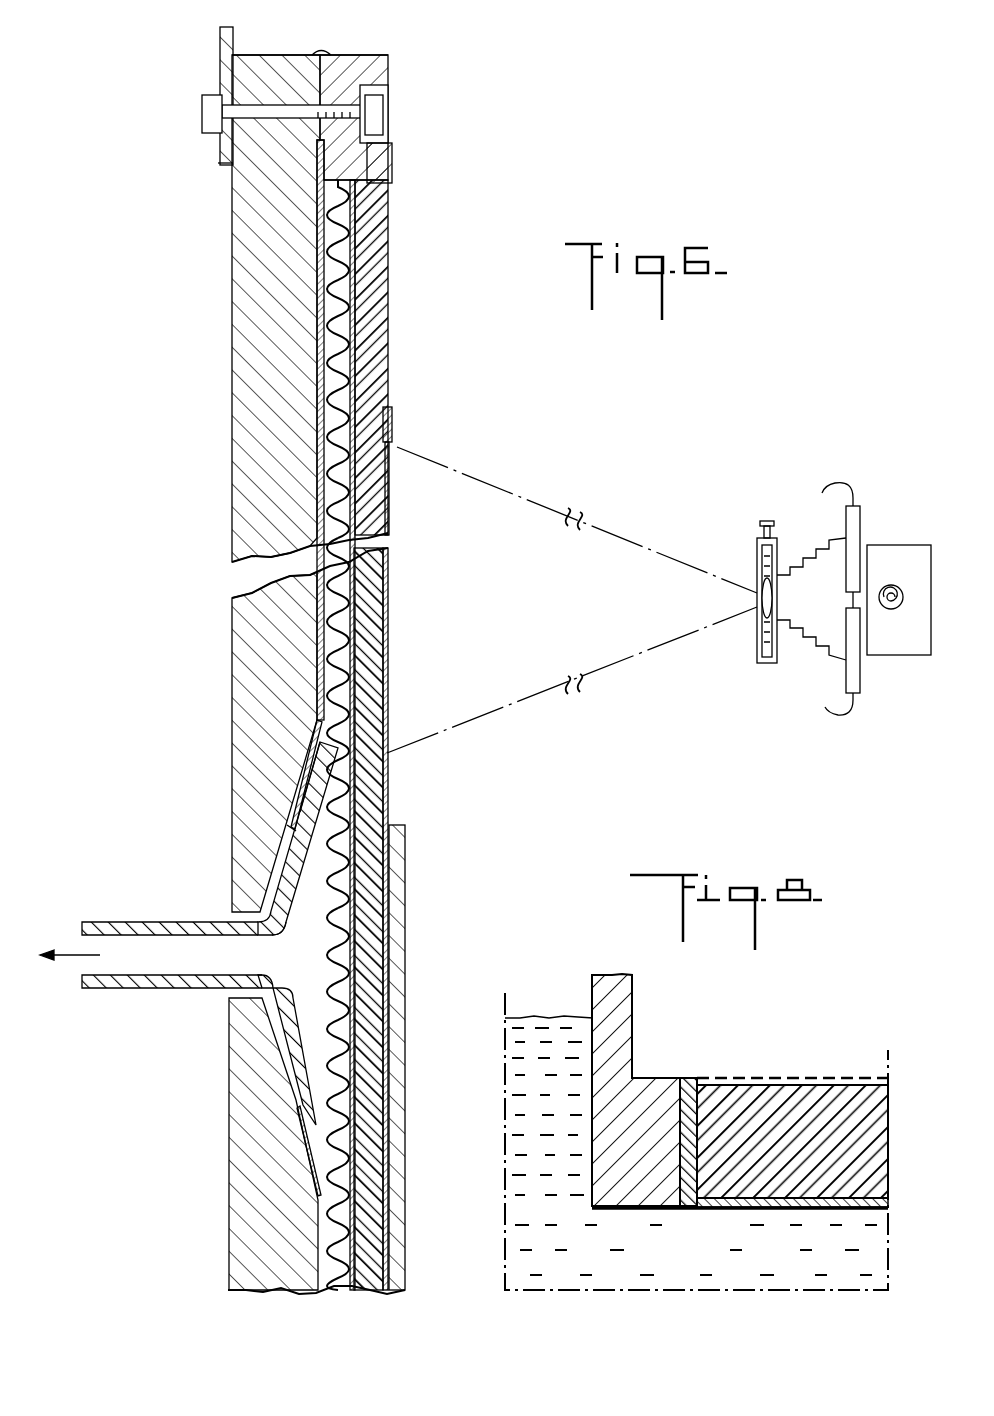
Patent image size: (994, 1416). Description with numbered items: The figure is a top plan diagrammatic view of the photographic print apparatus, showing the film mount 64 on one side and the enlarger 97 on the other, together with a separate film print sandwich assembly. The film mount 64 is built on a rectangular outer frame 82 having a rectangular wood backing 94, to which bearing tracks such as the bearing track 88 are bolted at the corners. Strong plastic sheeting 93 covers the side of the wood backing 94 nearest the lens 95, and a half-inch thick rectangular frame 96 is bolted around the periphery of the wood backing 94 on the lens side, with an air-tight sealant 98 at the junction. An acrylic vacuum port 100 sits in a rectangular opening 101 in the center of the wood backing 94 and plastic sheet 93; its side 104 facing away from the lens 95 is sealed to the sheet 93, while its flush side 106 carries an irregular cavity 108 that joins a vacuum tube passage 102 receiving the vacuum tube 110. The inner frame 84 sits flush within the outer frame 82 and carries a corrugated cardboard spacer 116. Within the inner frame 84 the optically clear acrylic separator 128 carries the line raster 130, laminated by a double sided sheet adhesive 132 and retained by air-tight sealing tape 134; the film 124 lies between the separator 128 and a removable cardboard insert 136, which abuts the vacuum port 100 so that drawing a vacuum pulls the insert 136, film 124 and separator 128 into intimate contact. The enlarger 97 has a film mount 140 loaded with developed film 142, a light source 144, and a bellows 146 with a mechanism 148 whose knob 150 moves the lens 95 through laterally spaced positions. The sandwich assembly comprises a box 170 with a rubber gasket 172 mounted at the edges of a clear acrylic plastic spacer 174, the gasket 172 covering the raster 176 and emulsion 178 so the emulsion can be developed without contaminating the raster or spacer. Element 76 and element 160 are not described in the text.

In FIG. 6, the film mount 64 is at (172, 368).
In FIG. 6, the housing wall 76 is at (246, 314).
In FIG. 6, the rectangular outer frame 82 is at (240, 523).
In FIG. 6, the inner frame 84 is at (372, 376).
In FIG. 6, the bearing track 88 is at (234, 33).
In FIG. 6, the plastic sheeting 93 is at (312, 752).
In FIG. 6, the wood backing 94 is at (233, 1175).
In FIG. 6, the lens 95 is at (756, 598).
In FIG. 6, the rectangular outer frame (spacer) 96 is at (380, 163).
In FIG. 6, the enlarger 97 is at (886, 470).
In FIG. 6, the air-tight sealant 98 is at (334, 50).
In FIG. 6, the acrylic vacuum port 100 is at (292, 1055).
In FIG. 6, the rectangular opening 101 is at (287, 826).
In FIG. 6, the vacuum tube passage 102 is at (262, 937).
In FIG. 6, the side of vacuum port facing away from lens 104 is at (291, 856).
In FIG. 6, the side of vacuum port facing lens 106 is at (312, 800).
In FIG. 6, the irregular cavity 108 is at (328, 1010).
In FIG. 6, the vacuum tube 110 is at (111, 985).
In FIG. 6, the corrugated cardboard spacer 116 is at (333, 258).
In FIG. 6, the film 124 is at (378, 628).
In FIG. 6, the optically clear acrylic separator 128 is at (389, 574).
In FIG. 6, the line raster 130 is at (390, 662).
In FIG. 6, the double sided sheet adhesive 132 is at (390, 497).
In FIG. 6, the air-tight sealing tape 134 is at (352, 424).
In FIG. 6, the removable cardboard insert 136 is at (330, 651).
In FIG. 6, the film mount (of enlarger) 140 is at (846, 521).
In FIG. 6, the developed film 142 is at (838, 481).
In FIG. 6, the light source 144 is at (898, 590).
In FIG. 6, the bellows 146 is at (815, 652).
In FIG. 6, the mechanism 148 is at (758, 548).
In FIG. 6, the knob 150 is at (761, 523).
In FIG. 6, the outer plate 160 is at (397, 898).
In FIG. 8, the box 170 is at (598, 1213).
In FIG. 8, the gasket 172 is at (688, 1213).
In FIG. 8, the clear acrylic plastic spacer 174 is at (812, 1100).
In FIG. 8, the raster 176 is at (722, 1078).
In FIG. 8, the emulsion 178 is at (727, 1213).